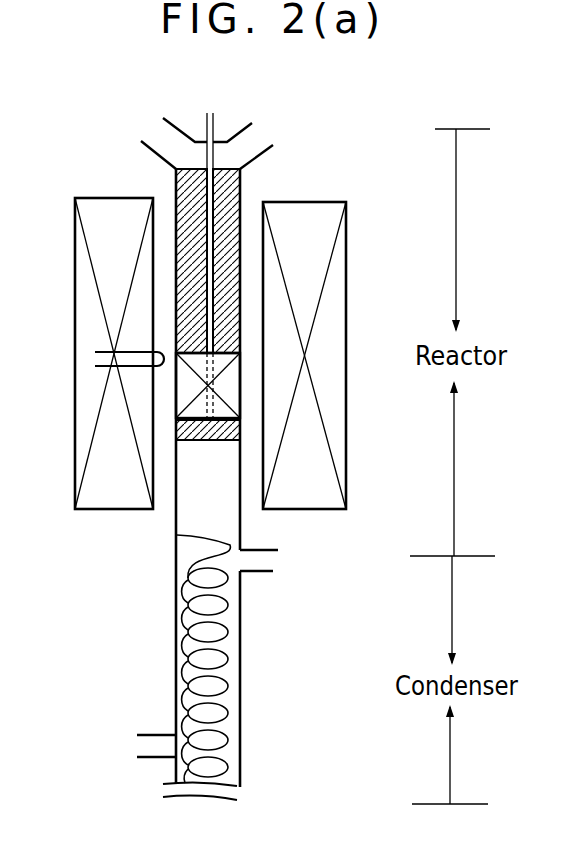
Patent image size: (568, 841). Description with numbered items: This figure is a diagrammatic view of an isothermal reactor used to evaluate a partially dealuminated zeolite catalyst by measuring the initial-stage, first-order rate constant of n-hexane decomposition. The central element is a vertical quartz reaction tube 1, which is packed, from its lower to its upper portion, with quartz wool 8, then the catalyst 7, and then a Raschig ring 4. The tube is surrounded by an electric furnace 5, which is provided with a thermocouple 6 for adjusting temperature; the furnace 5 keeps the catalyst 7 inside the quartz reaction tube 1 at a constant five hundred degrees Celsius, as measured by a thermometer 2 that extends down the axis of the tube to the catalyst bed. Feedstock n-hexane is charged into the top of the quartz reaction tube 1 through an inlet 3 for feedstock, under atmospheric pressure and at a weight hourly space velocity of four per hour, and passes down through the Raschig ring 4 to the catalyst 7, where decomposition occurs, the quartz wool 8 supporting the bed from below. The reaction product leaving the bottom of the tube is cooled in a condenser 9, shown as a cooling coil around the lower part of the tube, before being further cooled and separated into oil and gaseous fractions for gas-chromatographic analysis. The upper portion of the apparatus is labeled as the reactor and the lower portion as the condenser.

The quartz reaction tube 1 is at (174, 194).
The thermometer 2 is at (217, 123).
The inlet for feedstock 3 is at (258, 142).
The Raschig ring 4 is at (240, 195).
The electric furnace 5 is at (346, 292).
The thermocouple 6 is at (113, 352).
The catalyst 7 is at (185, 390).
The quartz wool 8 is at (177, 433).
The condenser 9 is at (237, 673).